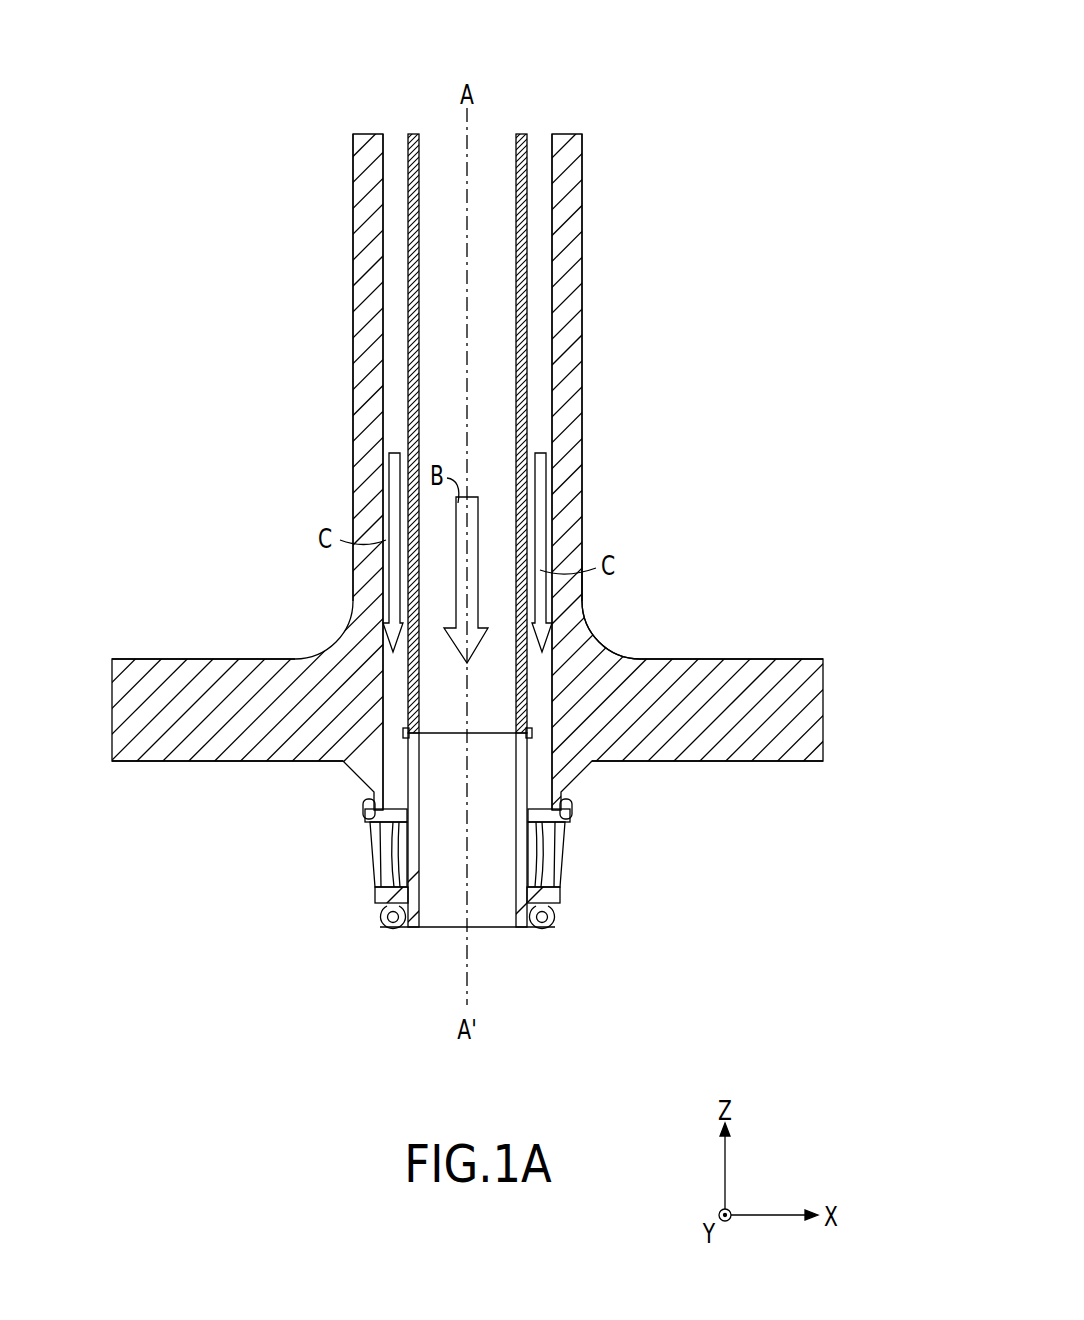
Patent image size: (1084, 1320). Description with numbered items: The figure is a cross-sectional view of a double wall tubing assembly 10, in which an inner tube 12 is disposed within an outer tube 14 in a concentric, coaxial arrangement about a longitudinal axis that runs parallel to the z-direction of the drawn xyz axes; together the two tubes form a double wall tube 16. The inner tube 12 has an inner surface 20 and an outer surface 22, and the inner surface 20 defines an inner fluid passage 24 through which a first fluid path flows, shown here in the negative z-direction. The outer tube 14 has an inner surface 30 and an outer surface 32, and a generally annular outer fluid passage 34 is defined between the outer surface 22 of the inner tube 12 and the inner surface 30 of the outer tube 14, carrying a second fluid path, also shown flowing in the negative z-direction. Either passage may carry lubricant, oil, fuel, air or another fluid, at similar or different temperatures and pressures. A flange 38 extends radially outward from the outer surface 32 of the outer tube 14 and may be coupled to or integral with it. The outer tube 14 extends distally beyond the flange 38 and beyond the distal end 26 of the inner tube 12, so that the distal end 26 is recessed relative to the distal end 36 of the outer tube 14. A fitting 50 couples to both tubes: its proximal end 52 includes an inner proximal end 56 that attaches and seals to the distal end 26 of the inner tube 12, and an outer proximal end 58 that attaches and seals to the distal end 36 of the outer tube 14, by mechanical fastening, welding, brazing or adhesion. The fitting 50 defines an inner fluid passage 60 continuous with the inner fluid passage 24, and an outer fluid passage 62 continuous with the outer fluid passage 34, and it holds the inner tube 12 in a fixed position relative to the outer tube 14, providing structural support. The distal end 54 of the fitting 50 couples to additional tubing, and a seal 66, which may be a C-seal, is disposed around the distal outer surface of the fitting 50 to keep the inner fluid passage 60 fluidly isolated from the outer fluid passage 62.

The double wall tubing assembly 10 is at (197, 103).
The inner tube 12 is at (527, 328).
The outer tube 14 is at (568, 296).
The double wall tube 16 is at (655, 273).
The inner surface 20 is at (406, 341).
The outer surface 22 is at (390, 362).
The inner fluid passage 24 is at (435, 240).
The distal end 26 is at (399, 742).
The inner surface 30 is at (530, 412).
The outer surface 32 is at (583, 425).
The outer fluid passage 34 is at (395, 312).
The distal end 36 is at (372, 820).
The flange 38 is at (822, 678).
The fitting 50 is at (597, 728).
The proximal end 52 is at (538, 701).
The distal end 54 is at (565, 967).
The inner proximal end 56 is at (404, 730).
The outer proximal end 58 is at (365, 803).
The inner fluid passage 60 is at (430, 850).
The outer fluid passage 62 is at (544, 815).
The seal 66 is at (381, 925).